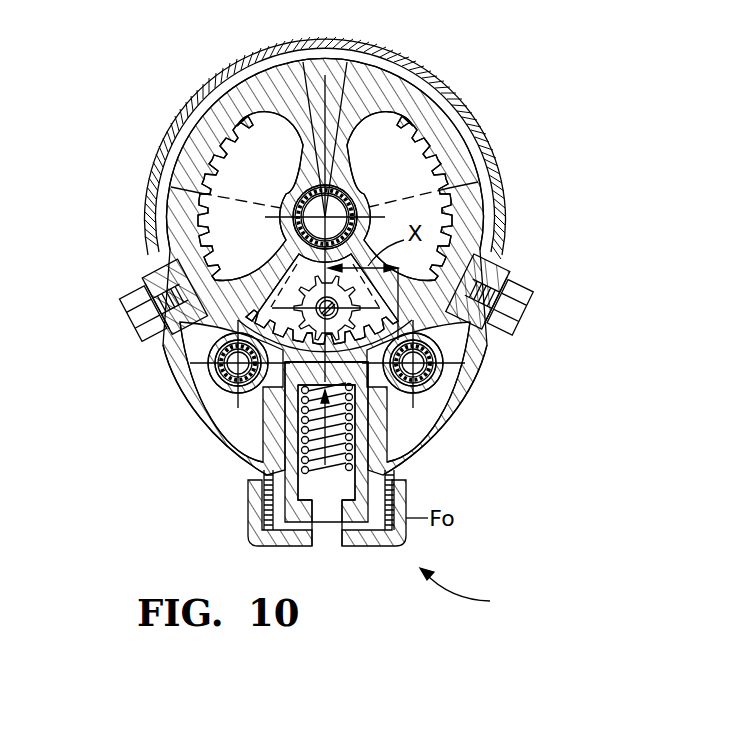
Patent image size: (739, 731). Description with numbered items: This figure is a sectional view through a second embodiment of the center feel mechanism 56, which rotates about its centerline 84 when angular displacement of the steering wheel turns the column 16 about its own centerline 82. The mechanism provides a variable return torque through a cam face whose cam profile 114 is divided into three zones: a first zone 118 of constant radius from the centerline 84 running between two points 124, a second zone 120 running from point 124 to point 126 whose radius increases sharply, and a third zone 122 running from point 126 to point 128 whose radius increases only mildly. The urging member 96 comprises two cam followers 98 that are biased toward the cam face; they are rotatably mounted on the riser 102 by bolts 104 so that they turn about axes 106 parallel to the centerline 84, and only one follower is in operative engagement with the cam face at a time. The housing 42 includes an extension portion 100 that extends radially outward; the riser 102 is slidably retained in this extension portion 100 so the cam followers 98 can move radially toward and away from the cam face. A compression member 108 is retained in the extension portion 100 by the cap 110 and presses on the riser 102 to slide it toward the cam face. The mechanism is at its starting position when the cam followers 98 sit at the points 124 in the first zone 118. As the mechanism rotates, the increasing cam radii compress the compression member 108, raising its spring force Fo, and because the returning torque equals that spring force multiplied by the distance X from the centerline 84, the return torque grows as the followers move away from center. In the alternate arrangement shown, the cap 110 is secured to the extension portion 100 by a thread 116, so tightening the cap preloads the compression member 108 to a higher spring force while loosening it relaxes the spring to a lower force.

The column 16 is at (293, 300).
The housing 42 is at (503, 176).
The center feel mechanism 56 is at (462, 160).
The centerline 82 is at (320, 430).
The centerline 84 is at (300, 182).
The urging member 96 is at (474, 592).
The cam followers 98 is at (278, 388).
The extension portion 100 is at (290, 380).
The riser 102 is at (262, 486).
The bolts 104 is at (228, 370).
The axes 106 is at (222, 392).
The compression member 108 is at (352, 420).
The cap 110 is at (285, 546).
The cam profile 114 is at (468, 128).
The thread 116 is at (262, 476).
The first zone 118 is at (350, 447).
The second zone 120 is at (158, 330).
The third zone 122 is at (232, 88).
The points 124 is at (222, 272).
The point 126 is at (171, 187).
The point 128 is at (303, 62).